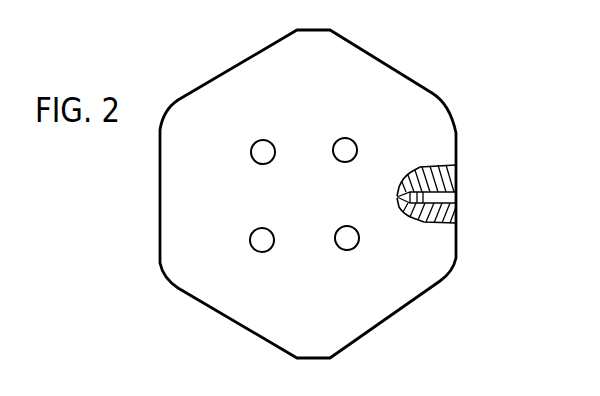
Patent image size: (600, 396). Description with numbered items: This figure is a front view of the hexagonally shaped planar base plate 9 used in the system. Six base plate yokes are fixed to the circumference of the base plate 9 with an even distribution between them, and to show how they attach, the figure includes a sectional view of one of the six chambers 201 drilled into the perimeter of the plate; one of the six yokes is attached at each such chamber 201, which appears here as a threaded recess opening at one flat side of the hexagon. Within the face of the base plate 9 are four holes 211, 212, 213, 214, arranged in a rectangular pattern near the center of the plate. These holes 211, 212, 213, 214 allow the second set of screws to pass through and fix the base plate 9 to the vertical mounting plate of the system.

The base plate 9 is at (318, 30).
The chamber 201 is at (456, 195).
The hole 211 is at (263, 140).
The hole 212 is at (345, 138).
The hole 213 is at (262, 228).
The hole 214 is at (356, 210).